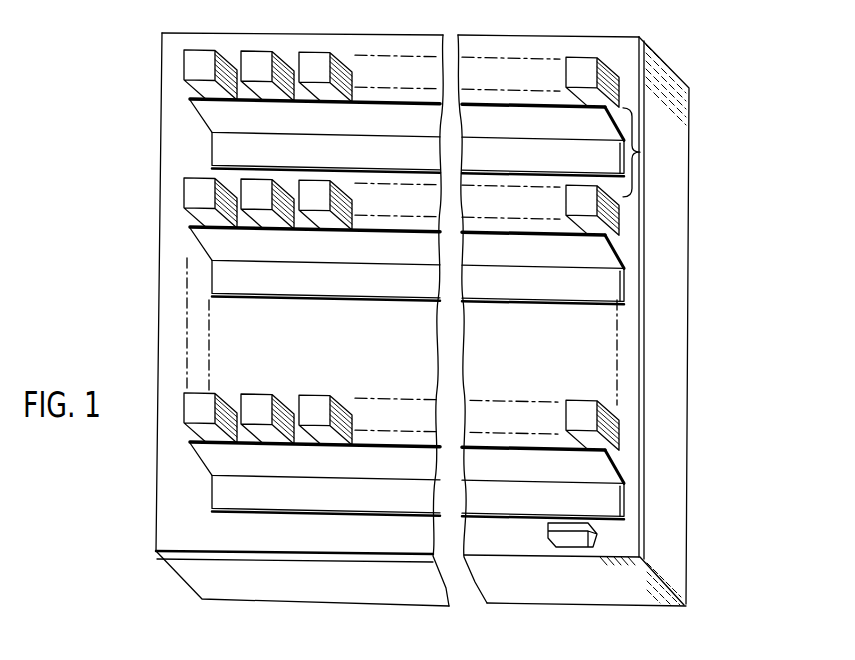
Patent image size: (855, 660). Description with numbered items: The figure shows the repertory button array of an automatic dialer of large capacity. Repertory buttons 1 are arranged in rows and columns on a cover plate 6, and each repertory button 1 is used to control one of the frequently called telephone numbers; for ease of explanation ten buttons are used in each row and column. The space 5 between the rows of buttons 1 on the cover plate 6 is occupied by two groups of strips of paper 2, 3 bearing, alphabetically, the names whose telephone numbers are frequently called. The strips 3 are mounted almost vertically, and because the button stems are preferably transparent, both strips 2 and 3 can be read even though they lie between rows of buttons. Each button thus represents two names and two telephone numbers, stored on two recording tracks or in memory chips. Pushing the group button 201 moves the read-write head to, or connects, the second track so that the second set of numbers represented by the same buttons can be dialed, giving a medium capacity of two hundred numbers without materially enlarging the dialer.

The repertory button 1 is at (187, 66).
The strip of paper 2 is at (210, 152).
The strip of paper 3 is at (207, 132).
The space 5 is at (640, 144).
The cover plate 6 is at (620, 523).
The group button 201 is at (548, 532).